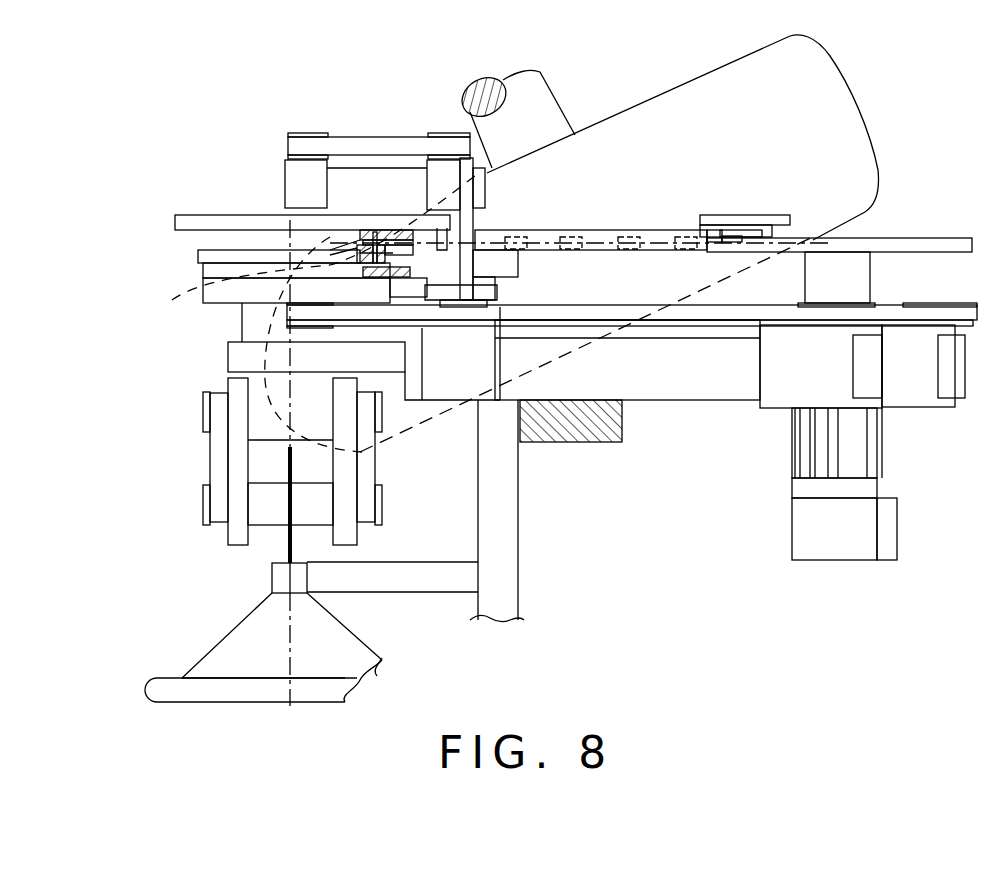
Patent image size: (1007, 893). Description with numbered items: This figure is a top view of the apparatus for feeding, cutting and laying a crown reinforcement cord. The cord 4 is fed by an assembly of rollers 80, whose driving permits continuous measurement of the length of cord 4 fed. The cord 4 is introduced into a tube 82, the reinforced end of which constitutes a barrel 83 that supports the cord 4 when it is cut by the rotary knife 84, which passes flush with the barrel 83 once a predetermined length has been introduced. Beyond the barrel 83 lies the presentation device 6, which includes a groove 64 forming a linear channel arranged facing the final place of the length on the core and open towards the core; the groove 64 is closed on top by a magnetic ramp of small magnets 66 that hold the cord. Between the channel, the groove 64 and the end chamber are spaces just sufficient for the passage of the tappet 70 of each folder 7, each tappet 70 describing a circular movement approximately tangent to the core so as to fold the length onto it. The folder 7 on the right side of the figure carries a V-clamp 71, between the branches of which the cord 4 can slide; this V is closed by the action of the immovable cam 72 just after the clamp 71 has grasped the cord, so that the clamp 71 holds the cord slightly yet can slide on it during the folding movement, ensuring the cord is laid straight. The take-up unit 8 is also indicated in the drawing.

The folder 7 is at (212, 166).
The barrel 83 is at (363, 232).
The rotary knife 84 is at (380, 230).
The tappet 70 is at (447, 228).
The presentation device 6 is at (583, 190).
The groove 64 is at (600, 230).
The small magnets 66 is at (562, 228).
The V-clamp 71 is at (733, 230).
The immovable cam 72 is at (753, 228).
The tube 82 is at (318, 253).
The take-up unit 8 is at (186, 530).
The roller 80 is at (282, 537).
The cord 4 is at (205, 700).